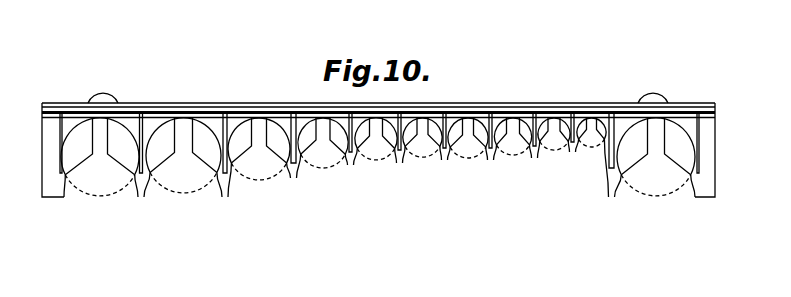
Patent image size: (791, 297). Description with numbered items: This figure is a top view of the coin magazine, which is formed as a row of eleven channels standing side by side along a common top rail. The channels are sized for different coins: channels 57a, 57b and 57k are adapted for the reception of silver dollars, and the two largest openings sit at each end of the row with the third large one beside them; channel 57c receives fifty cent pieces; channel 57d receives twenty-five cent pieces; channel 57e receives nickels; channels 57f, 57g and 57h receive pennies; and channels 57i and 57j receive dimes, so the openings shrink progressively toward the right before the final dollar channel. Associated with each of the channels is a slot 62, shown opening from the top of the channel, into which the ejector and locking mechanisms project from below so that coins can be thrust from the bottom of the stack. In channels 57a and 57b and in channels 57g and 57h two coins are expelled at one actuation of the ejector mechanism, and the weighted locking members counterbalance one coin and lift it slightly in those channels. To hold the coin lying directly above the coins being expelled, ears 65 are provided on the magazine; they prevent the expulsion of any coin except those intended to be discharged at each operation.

The channel 57a is at (110, 141).
The channel 57b is at (197, 130).
The channel 57c is at (271, 128).
The channel 57d is at (332, 127).
The channel 57e is at (385, 125).
The channel 57f is at (432, 125).
The channel 57g is at (477, 125).
The channel 57h is at (522, 125).
The channel 57i is at (555, 123).
The channel 57j is at (597, 123).
The channel 57k is at (657, 133).
The slot 62 is at (101, 148).
The ears 65 is at (65, 188).